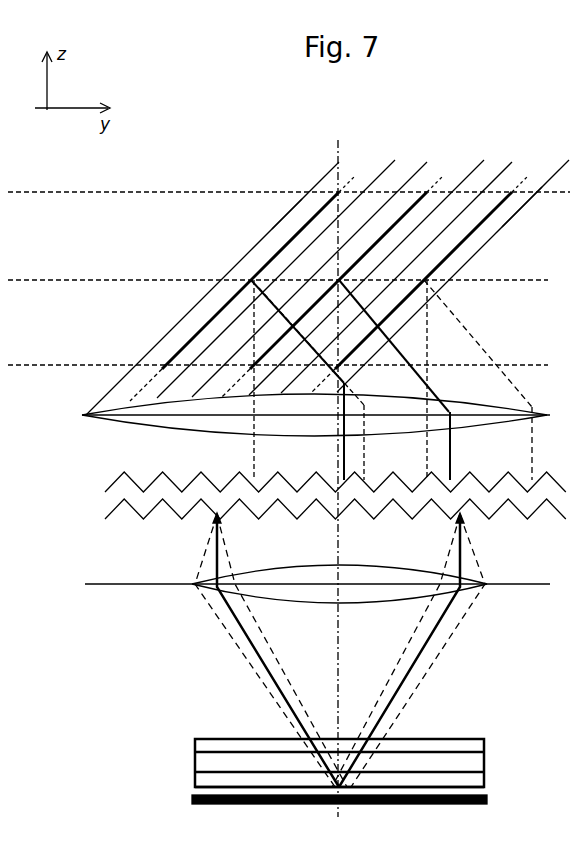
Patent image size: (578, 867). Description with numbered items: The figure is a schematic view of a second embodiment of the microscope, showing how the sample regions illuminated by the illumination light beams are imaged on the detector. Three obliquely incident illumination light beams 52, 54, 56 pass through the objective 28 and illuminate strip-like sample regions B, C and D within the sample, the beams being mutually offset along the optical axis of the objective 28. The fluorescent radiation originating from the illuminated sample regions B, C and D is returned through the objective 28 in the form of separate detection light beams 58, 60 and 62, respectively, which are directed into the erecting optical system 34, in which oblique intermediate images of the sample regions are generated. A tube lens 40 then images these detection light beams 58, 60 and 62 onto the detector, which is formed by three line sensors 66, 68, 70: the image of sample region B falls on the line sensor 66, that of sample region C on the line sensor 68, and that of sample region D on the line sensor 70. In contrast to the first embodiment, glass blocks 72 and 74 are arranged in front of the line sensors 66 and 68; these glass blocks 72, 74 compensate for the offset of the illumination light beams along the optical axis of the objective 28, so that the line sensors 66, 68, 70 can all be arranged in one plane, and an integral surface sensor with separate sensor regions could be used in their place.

The objective 28 is at (80, 413).
The erecting optical system 34 is at (106, 497).
The tube lens 40 is at (482, 576).
The illumination light beam 52 is at (293, 215).
The illumination light beam 54 is at (318, 268).
The illumination light beam 56 is at (499, 227).
The detection light beam 58 is at (414, 621).
The detection light beam 60 is at (273, 683).
The detection light beam 62 is at (422, 664).
The line sensor 66 is at (476, 749).
The line sensor 68 is at (470, 780).
The line sensor 70 is at (476, 797).
The glass block 72 is at (191, 740).
The glass block 74 is at (192, 771).
The sample region B is at (314, 213).
The sample region C is at (405, 210).
The sample region D is at (487, 213).